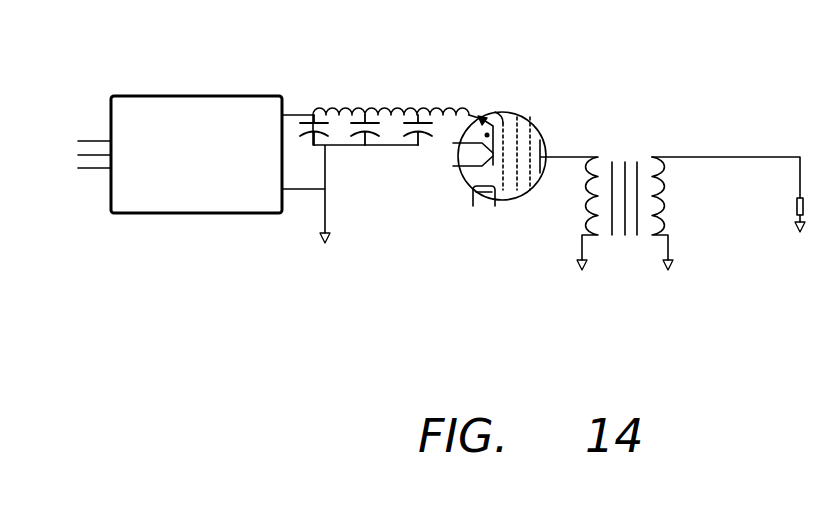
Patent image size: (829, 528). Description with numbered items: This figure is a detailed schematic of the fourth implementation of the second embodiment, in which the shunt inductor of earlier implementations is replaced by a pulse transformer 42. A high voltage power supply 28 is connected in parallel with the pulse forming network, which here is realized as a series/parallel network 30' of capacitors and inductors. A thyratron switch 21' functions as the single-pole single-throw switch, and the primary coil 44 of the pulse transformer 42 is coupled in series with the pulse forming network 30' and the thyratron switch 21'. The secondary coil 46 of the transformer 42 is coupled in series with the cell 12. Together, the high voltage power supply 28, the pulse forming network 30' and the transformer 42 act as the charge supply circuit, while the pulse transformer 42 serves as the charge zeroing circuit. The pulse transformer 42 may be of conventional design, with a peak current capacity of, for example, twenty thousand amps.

The high voltage power supply 28 is at (207, 213).
The series/parallel network of capacitors and inductors 30' is at (368, 87).
The thyratron switch 21' is at (511, 191).
The pulse transformer 42 is at (625, 256).
The primary coil 44 is at (581, 208).
The secondary coil 46 is at (669, 205).
The cell 12 is at (793, 212).